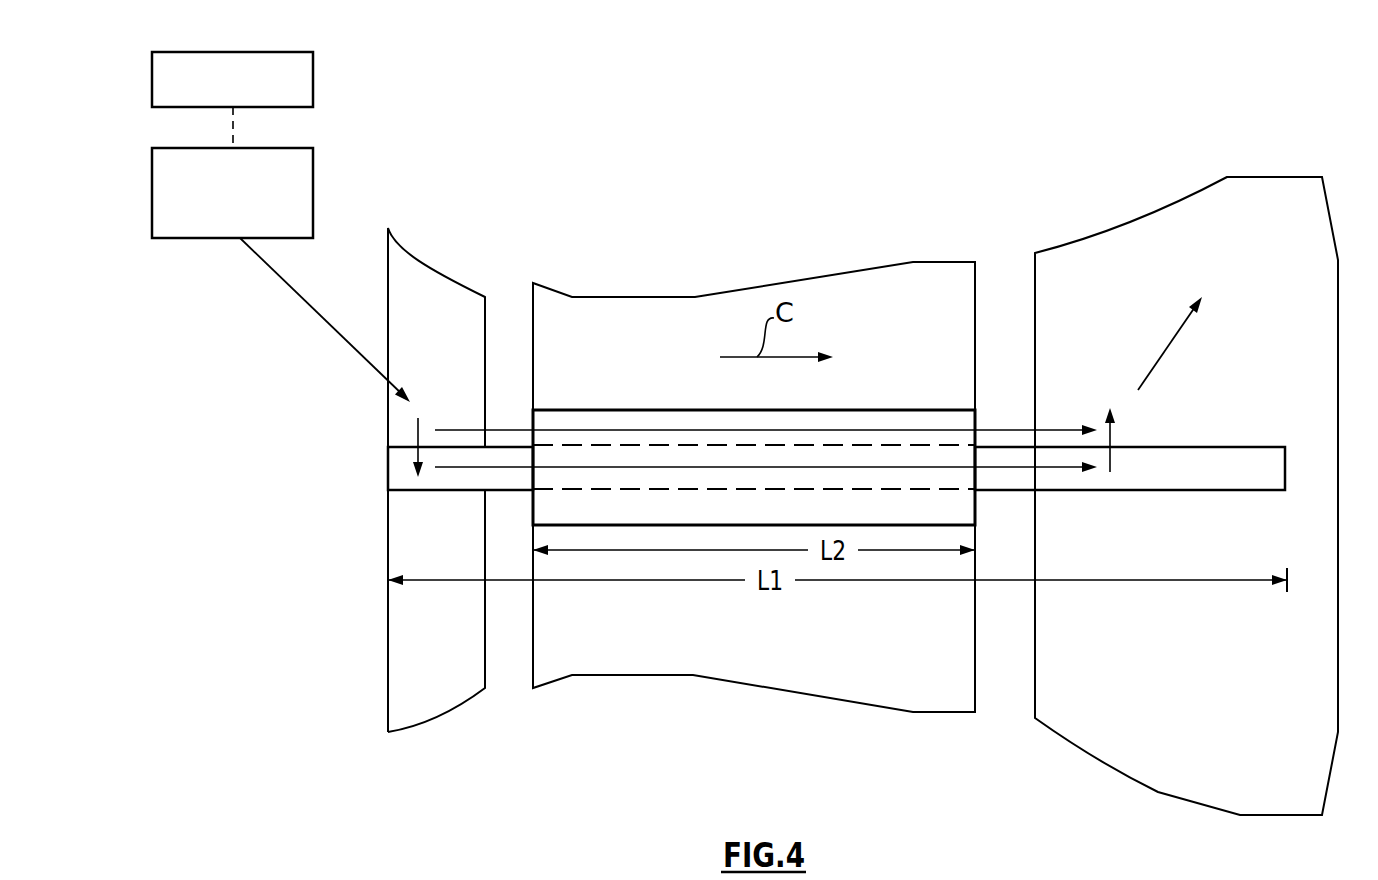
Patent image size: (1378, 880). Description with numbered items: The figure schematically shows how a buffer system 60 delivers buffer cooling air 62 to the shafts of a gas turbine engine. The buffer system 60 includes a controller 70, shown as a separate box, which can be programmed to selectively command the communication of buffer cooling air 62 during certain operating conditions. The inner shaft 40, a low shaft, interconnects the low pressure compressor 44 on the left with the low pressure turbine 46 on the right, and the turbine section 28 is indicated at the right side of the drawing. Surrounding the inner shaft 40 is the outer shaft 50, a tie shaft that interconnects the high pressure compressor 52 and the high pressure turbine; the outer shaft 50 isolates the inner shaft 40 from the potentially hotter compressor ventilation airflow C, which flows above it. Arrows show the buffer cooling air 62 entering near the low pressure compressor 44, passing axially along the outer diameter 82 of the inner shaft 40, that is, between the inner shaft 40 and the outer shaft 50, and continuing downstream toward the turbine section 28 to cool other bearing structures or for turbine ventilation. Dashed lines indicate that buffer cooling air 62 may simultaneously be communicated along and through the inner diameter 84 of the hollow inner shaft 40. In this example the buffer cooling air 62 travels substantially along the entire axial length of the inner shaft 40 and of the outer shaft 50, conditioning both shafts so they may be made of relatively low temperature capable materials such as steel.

The turbine section 28 is at (1279, 170).
The inner shaft 40 is at (503, 492).
The low pressure compressor 44 is at (445, 667).
The low pressure turbine 46 is at (1195, 656).
The outer shaft 50 is at (625, 410).
The high pressure compressor 52 is at (753, 695).
The buffer system 60 is at (313, 193).
The buffer cooling air 62 is at (295, 297).
The controller 70 is at (313, 84).
The outer diameter 82 is at (1244, 436).
The inner diameter 84 is at (1211, 479).